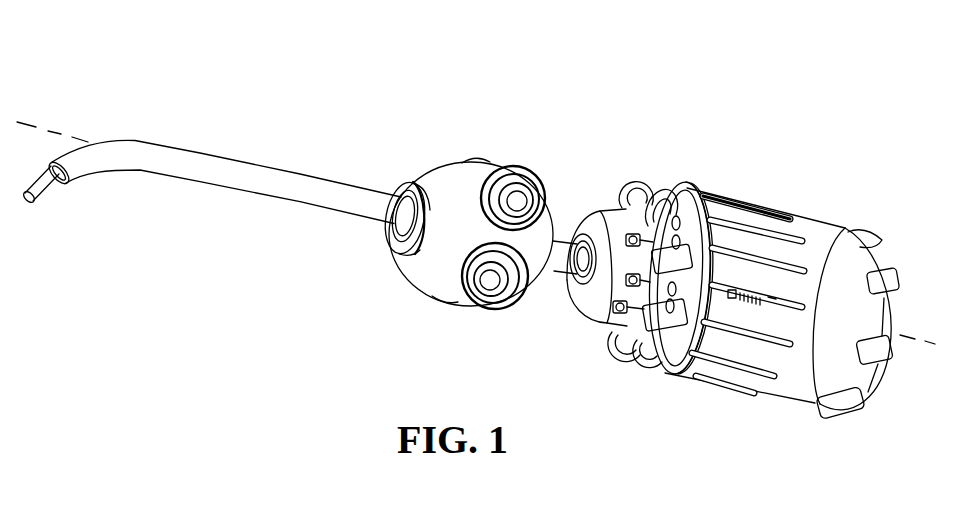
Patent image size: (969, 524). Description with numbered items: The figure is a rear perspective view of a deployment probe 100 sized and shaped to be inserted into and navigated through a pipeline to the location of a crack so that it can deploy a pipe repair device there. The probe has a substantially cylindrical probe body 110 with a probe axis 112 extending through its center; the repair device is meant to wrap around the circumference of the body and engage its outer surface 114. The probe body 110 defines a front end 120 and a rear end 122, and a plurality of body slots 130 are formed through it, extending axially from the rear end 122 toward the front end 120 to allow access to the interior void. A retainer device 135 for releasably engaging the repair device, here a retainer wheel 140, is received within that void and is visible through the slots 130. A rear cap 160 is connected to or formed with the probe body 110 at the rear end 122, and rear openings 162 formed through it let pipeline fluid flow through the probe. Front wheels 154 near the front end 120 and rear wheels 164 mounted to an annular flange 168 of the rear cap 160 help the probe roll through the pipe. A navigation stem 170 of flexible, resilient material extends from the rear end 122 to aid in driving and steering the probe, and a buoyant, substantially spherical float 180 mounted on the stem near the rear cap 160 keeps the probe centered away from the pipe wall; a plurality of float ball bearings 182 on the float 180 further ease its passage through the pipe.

The deployment probe 100 is at (592, 72).
The probe body 110 is at (797, 185).
The probe axis 112 is at (50, 128).
The outer surface 114 is at (820, 270).
The front end 120 is at (893, 242).
The rear end 122 is at (675, 170).
The body slots 130 is at (713, 362).
The retainer device 135 is at (745, 284).
The retainer wheel 140 is at (750, 214).
The front wheels 154 is at (880, 363).
The rear cap 160 is at (590, 300).
The rear openings 162 is at (628, 187).
The rear wheels 164 is at (638, 180).
The annular flange 168 is at (652, 362).
The navigation stem 170 is at (240, 172).
The float 180 is at (428, 130).
The float ball bearings 182 is at (514, 193).